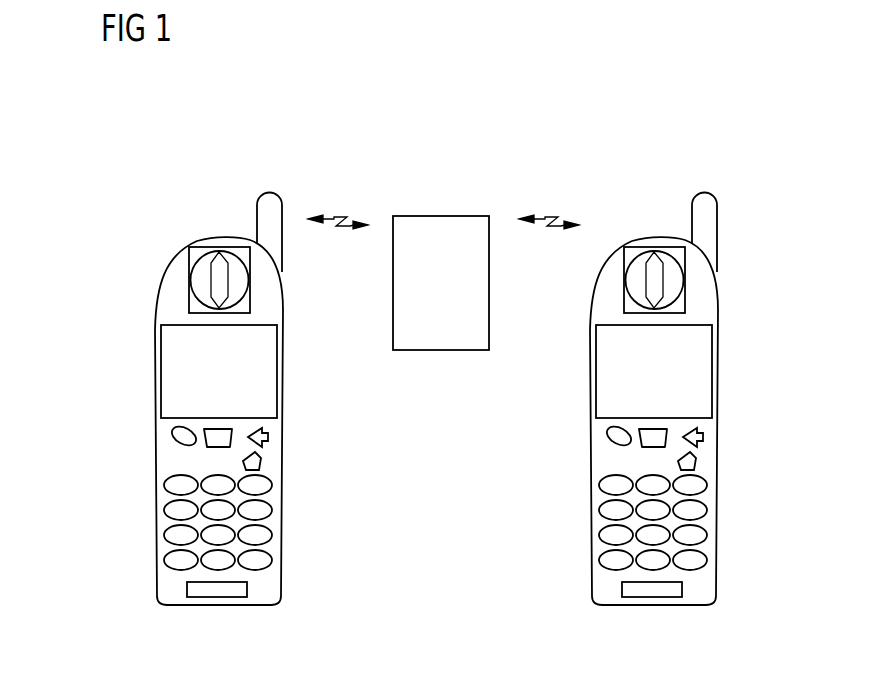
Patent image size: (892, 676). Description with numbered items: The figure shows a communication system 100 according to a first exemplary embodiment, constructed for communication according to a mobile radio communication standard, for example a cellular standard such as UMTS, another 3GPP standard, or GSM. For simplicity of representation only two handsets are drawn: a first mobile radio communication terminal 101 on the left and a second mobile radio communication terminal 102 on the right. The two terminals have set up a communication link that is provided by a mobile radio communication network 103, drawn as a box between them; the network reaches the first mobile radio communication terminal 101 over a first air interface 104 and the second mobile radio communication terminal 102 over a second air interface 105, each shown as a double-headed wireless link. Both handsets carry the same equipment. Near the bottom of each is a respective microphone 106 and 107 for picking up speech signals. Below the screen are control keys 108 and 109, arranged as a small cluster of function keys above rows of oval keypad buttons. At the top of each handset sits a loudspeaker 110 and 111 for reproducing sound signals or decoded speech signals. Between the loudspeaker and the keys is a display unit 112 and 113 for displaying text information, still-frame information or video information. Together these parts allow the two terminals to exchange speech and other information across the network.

The communication system 100 is at (731, 71).
The first mobile radio communication terminal 101 is at (193, 165).
The second mobile radio communication terminal 102 is at (653, 374).
The mobile radio communication network 103 is at (441, 351).
The first air interface 104 is at (333, 216).
The second air interface 105 is at (549, 194).
The microphone 106 is at (218, 598).
The microphone 107 is at (652, 618).
The control keys 108 is at (171, 438).
The control keys 109 is at (651, 498).
The loudspeaker 110 is at (211, 246).
The loudspeaker 111 is at (654, 251).
The display unit 112 is at (277, 372).
The display unit 113 is at (685, 371).